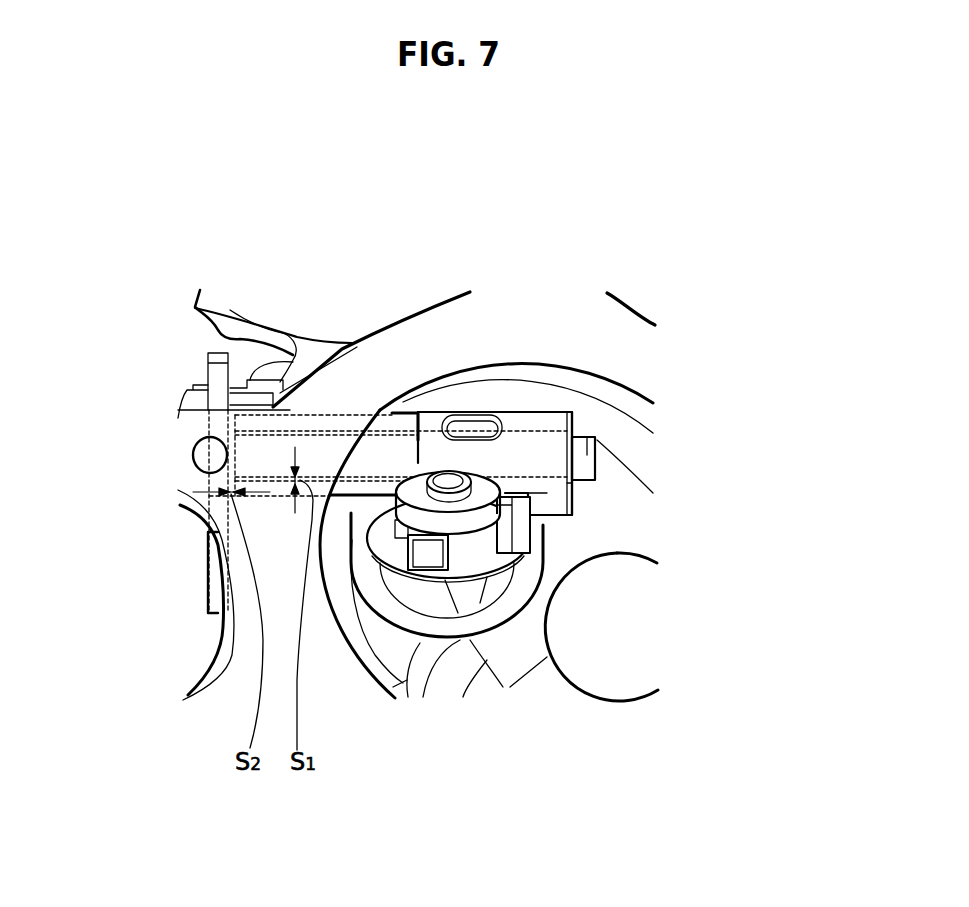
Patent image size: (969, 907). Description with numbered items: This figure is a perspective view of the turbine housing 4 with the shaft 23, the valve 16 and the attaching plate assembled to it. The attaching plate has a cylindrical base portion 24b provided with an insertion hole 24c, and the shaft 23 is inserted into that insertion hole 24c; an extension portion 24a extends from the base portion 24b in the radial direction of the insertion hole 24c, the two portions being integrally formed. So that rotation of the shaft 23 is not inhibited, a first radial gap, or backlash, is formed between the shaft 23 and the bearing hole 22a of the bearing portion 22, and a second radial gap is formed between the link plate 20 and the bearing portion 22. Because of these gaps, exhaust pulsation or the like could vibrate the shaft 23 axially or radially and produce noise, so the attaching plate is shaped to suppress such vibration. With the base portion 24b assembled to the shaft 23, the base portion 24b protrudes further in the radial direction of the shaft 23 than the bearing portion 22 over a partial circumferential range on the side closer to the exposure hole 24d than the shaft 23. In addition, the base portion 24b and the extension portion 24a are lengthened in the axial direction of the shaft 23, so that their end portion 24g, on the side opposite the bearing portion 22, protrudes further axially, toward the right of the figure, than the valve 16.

The turbine housing 4 is at (430, 340).
The valve 16 is at (380, 533).
The link plate 20 is at (207, 373).
The bearing portion 22 is at (392, 428).
The bearing hole 22a is at (248, 434).
The shaft 23 is at (587, 453).
The extension portion 24a is at (573, 482).
The base portion 24b is at (552, 443).
The insertion hole 24c is at (597, 470).
The exposure hole 24d is at (480, 423).
The end portion 24g is at (547, 487).